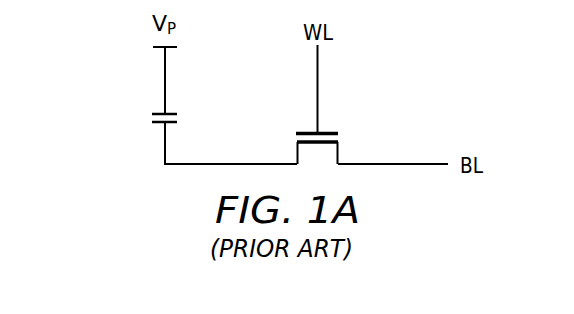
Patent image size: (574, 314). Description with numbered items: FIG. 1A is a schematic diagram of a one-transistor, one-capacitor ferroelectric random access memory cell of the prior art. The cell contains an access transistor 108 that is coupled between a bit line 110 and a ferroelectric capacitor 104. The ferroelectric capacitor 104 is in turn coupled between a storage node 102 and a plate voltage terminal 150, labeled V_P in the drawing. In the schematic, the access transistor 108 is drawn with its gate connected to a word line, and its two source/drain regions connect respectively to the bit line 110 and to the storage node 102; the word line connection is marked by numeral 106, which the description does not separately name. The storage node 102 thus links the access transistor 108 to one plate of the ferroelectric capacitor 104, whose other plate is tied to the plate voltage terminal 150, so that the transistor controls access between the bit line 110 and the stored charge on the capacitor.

The plate voltage terminal 150 is at (162, 82).
The ferroelectric capacitor 104 is at (150, 117).
The storage node 102 is at (237, 163).
The word line gate connection 106 is at (317, 82).
The access transistor 108 is at (330, 128).
The bit line 110 is at (392, 163).